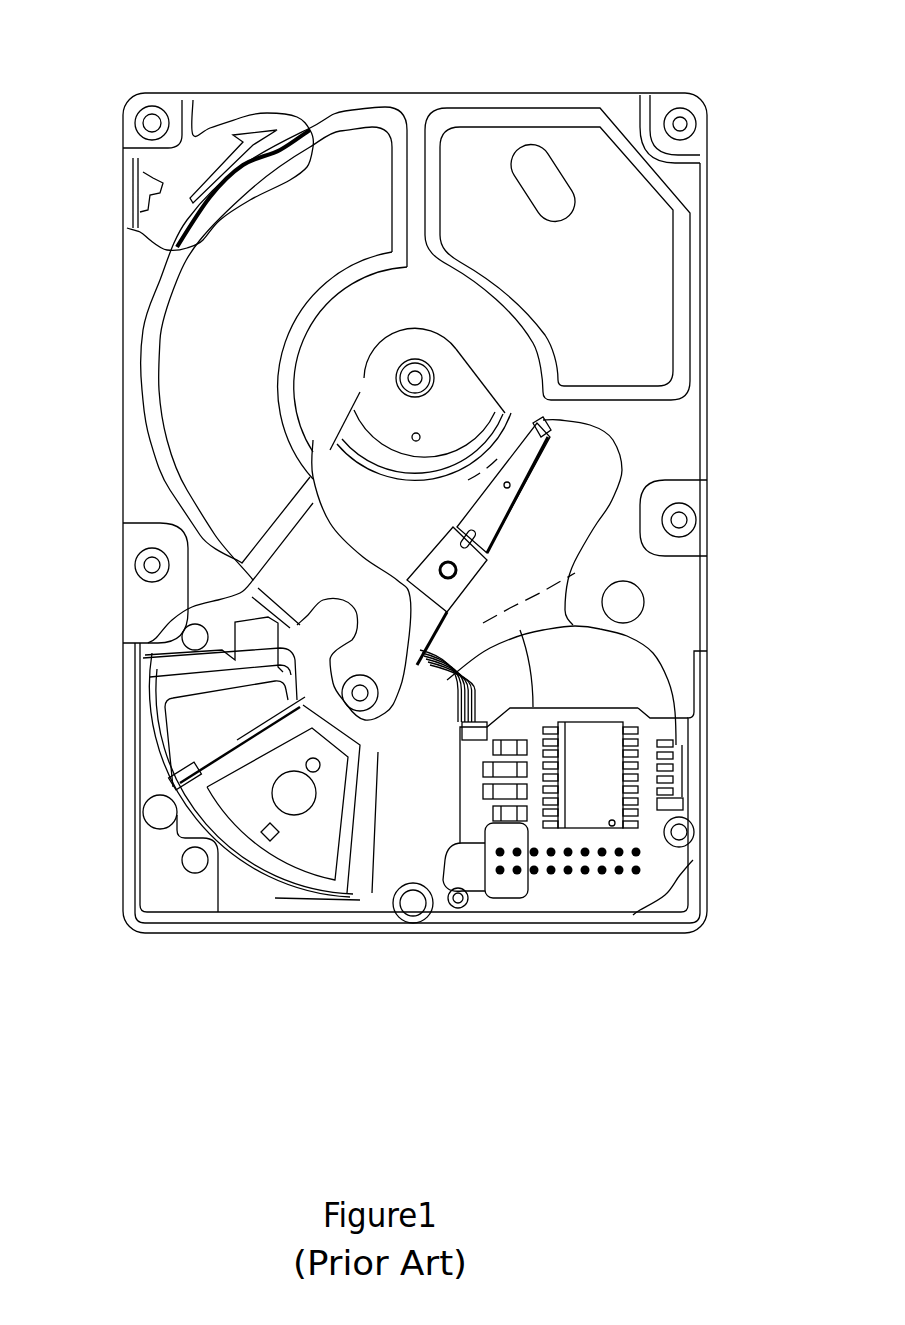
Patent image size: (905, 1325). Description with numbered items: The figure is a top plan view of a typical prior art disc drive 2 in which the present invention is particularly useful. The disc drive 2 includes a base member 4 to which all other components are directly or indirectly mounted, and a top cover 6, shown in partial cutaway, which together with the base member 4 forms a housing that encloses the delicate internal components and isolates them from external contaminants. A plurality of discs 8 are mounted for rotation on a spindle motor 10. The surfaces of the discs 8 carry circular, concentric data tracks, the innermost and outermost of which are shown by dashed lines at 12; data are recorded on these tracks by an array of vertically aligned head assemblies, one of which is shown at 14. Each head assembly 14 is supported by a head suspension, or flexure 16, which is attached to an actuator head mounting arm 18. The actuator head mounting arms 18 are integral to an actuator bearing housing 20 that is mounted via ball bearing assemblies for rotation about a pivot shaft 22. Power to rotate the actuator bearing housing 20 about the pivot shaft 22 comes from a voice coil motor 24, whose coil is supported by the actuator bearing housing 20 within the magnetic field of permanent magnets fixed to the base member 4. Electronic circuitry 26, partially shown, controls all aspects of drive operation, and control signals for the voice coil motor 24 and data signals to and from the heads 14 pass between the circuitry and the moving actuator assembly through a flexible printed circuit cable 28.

The disc drive 2 is at (112, 471).
The base member 4 is at (125, 871).
The top cover 6 is at (415, 104).
The discs 8 is at (560, 549).
The spindle motor 10 is at (460, 380).
The data tracks 12 is at (453, 488).
The head assembly 14 is at (553, 420).
The head suspension 16 is at (497, 503).
The actuator head mounting arm 18 is at (473, 652).
The actuator bearing housing 20 is at (322, 630).
The pivot shaft 22 is at (360, 688).
The voice coil motor 24 is at (244, 880).
The electronic circuitry 26 is at (650, 743).
The flexible printed circuit cable 28 is at (650, 670).